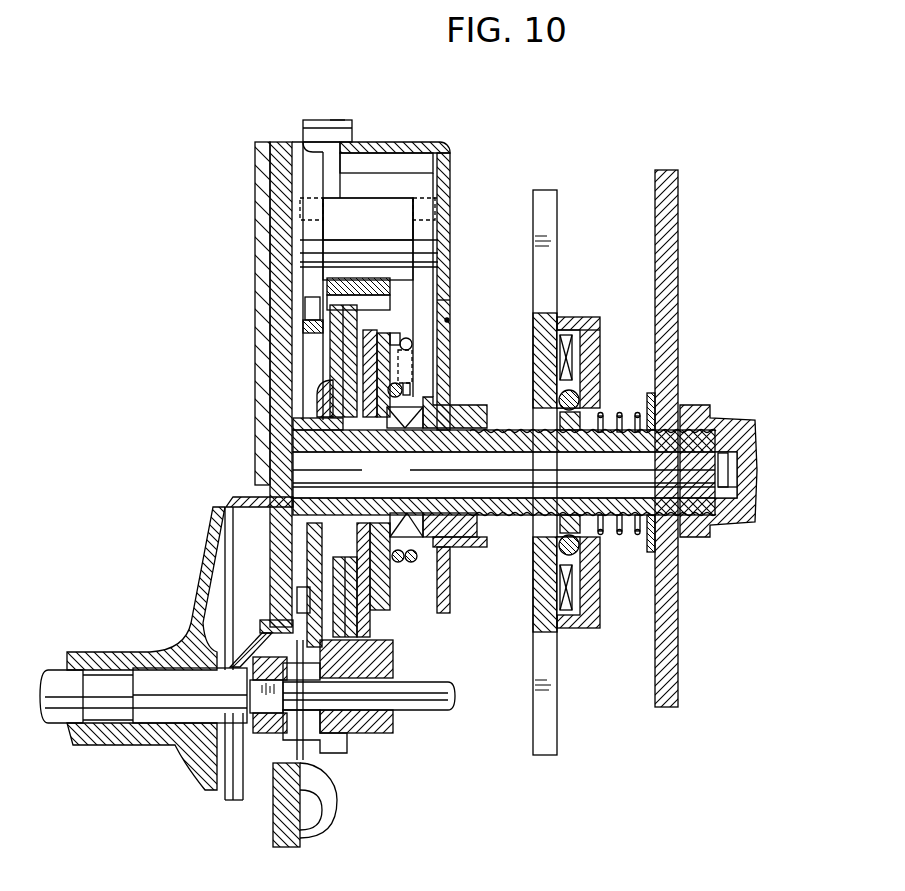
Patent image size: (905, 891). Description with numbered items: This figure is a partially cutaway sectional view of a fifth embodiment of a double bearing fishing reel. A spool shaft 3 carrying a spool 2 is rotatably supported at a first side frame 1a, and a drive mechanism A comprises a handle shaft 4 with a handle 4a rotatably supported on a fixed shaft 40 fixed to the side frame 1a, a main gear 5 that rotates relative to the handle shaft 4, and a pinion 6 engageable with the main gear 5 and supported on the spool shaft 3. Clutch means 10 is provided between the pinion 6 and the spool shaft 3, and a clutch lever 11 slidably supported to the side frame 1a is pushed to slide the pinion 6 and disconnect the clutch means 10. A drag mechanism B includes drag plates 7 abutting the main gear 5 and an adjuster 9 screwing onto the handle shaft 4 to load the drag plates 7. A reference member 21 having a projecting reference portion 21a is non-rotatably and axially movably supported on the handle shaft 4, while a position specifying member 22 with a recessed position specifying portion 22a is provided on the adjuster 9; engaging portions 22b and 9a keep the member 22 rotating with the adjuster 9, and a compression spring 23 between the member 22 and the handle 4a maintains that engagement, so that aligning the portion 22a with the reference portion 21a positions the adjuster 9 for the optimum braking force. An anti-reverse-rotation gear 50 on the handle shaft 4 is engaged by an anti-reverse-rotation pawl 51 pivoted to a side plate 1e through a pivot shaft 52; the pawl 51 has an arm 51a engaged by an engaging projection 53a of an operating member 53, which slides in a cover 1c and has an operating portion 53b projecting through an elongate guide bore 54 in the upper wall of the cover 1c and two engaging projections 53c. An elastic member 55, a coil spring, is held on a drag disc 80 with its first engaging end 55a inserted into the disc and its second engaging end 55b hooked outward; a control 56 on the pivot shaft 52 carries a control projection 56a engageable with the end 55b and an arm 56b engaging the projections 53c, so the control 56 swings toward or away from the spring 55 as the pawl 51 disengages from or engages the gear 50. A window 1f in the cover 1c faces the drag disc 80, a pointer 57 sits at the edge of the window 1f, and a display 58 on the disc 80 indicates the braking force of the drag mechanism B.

The first side frame 1a is at (262, 142).
The cover 1c is at (448, 150).
The side plate 1e is at (272, 160).
The window 1f is at (449, 302).
The spool 2 is at (150, 655).
The spool shaft 3 is at (100, 673).
The handle shaft 4 is at (718, 437).
The handle 4a is at (680, 252).
The main gear 5 is at (352, 348).
The pinion 6 is at (372, 735).
The drag plates 7 is at (370, 363).
The adjuster 9 is at (557, 315).
The engaging portion 9a is at (578, 352).
The clutch means 10 is at (268, 738).
The clutch lever 11 is at (325, 838).
The reference member 21 is at (560, 397).
The reference portion 21a is at (667, 396).
The position specifying member 22 is at (575, 323).
The position specifying portion 22a is at (612, 372).
The engaging portion 22b is at (600, 335).
The compression spring 23 is at (621, 535).
The fixed shaft 40 is at (703, 482).
The anti-reverse-rotation gear 50 is at (308, 325).
The anti-reverse-rotation pawl 51 is at (305, 305).
The arm 51a is at (323, 213).
The pivot shaft 52 is at (320, 245).
The operating member 53 is at (315, 118).
The engaging projection 53a is at (303, 207).
The operating portion 53b is at (340, 118).
The engaging projections 53c is at (430, 213).
The pivot 54 is at (318, 148).
The elastic member 55 is at (418, 390).
The first engaging end 55a is at (515, 475).
The second engaging end 55b is at (410, 343).
The control 56 is at (432, 237).
The control projection 56a is at (412, 372).
The arm 56b is at (437, 200).
The pointer 57 is at (447, 320).
The display 58 is at (392, 338).
The drag disc 80 is at (380, 393).
The drive mechanism A is at (293, 505).
The drag mechanism B is at (420, 262).